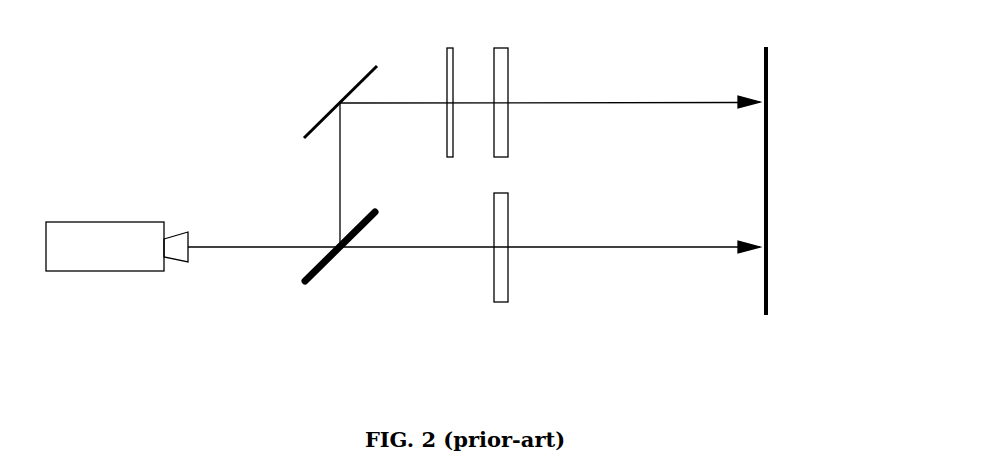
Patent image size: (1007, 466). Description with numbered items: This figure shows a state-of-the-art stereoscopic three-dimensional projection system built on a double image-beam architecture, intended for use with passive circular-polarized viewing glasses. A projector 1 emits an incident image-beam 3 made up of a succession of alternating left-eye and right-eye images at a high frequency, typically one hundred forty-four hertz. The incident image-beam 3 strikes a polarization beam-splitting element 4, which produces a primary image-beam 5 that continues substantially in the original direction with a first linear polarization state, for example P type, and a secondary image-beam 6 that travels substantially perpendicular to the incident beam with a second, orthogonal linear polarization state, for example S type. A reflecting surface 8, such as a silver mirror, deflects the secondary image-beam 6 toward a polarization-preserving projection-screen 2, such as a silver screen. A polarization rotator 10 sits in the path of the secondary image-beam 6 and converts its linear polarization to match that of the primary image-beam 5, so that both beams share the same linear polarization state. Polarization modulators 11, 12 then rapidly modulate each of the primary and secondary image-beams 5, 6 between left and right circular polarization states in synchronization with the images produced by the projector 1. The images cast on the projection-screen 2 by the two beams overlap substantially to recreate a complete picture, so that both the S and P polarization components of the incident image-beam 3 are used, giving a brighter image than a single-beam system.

The projector 1 is at (90, 206).
The polarization-preserving projection-screen 2 is at (784, 54).
The incident image-beam 3 is at (255, 234).
The polarization beam-splitting element 4 is at (328, 290).
The primary image-beam 5 is at (432, 263).
The secondary image-beam 6 is at (356, 167).
The reflecting surface 8 is at (304, 112).
The polarization rotator 10 is at (434, 52).
The polarization modulator 11 is at (523, 52).
The polarization modulator 12 is at (521, 298).